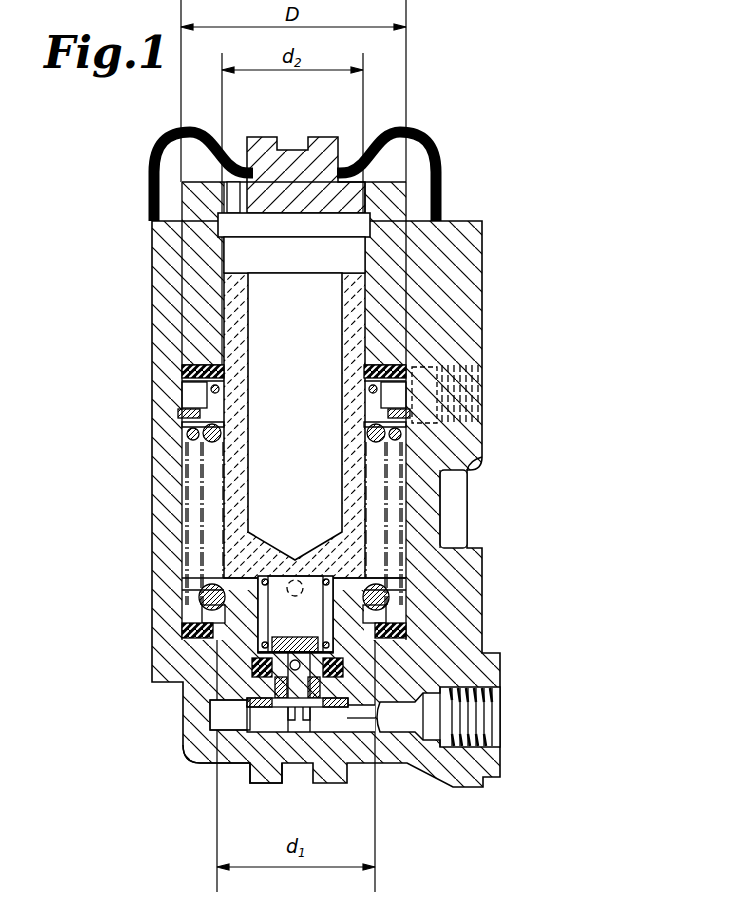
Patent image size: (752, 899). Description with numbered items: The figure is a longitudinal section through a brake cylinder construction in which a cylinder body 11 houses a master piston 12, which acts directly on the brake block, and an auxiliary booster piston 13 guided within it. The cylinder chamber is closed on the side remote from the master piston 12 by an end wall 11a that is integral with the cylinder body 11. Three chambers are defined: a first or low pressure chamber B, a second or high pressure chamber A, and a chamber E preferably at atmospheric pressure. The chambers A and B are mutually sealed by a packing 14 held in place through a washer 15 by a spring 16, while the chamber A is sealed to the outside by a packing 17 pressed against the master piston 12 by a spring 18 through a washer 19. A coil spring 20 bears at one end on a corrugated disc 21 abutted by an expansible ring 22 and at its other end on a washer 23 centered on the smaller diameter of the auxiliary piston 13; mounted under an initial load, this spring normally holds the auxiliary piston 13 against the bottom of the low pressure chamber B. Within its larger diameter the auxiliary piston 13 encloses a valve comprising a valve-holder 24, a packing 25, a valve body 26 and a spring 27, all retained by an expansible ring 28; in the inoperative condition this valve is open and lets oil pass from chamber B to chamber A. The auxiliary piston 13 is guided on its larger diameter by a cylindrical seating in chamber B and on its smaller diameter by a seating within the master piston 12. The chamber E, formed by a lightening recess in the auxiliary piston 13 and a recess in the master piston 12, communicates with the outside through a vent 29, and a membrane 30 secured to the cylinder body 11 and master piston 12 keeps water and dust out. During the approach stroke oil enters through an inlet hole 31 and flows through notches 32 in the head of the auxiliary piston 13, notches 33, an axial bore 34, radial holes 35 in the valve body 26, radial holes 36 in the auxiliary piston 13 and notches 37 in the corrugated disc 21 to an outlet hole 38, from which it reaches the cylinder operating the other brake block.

The cylinder body 11 is at (455, 243).
The end wall 11a is at (262, 783).
The master piston 12 is at (390, 278).
The auxiliary booster piston 13 is at (233, 295).
The packing 14 is at (184, 630).
The washer 15 is at (207, 612).
The spring 16 is at (400, 525).
The packing 17 is at (383, 365).
The spring 18 is at (213, 397).
The washer 19 is at (390, 387).
The coil spring 20 is at (208, 472).
The corrugated disc 21 is at (195, 422).
The expansible ring 22 is at (178, 412).
The washer 23 is at (393, 600).
The valve-holder 24 is at (262, 692).
The packing 25 is at (283, 660).
The valve body 26 is at (300, 640).
The spring 27 is at (266, 622).
The expansible ring 28 is at (230, 706).
The vent 29 is at (223, 193).
The membrane 30 is at (438, 160).
The inlet hole 31 is at (480, 728).
The notches 32 is at (365, 735).
The notches 33 is at (300, 742).
The axial bore 34 is at (320, 735).
The radial holes 35 is at (222, 760).
The radial holes 36 is at (350, 588).
The notches 37 is at (400, 440).
The outlet hole 38 is at (460, 405).
The high pressure chamber A is at (470, 498).
The low pressure chamber B is at (375, 728).
The atmospheric chamber E is at (272, 488).